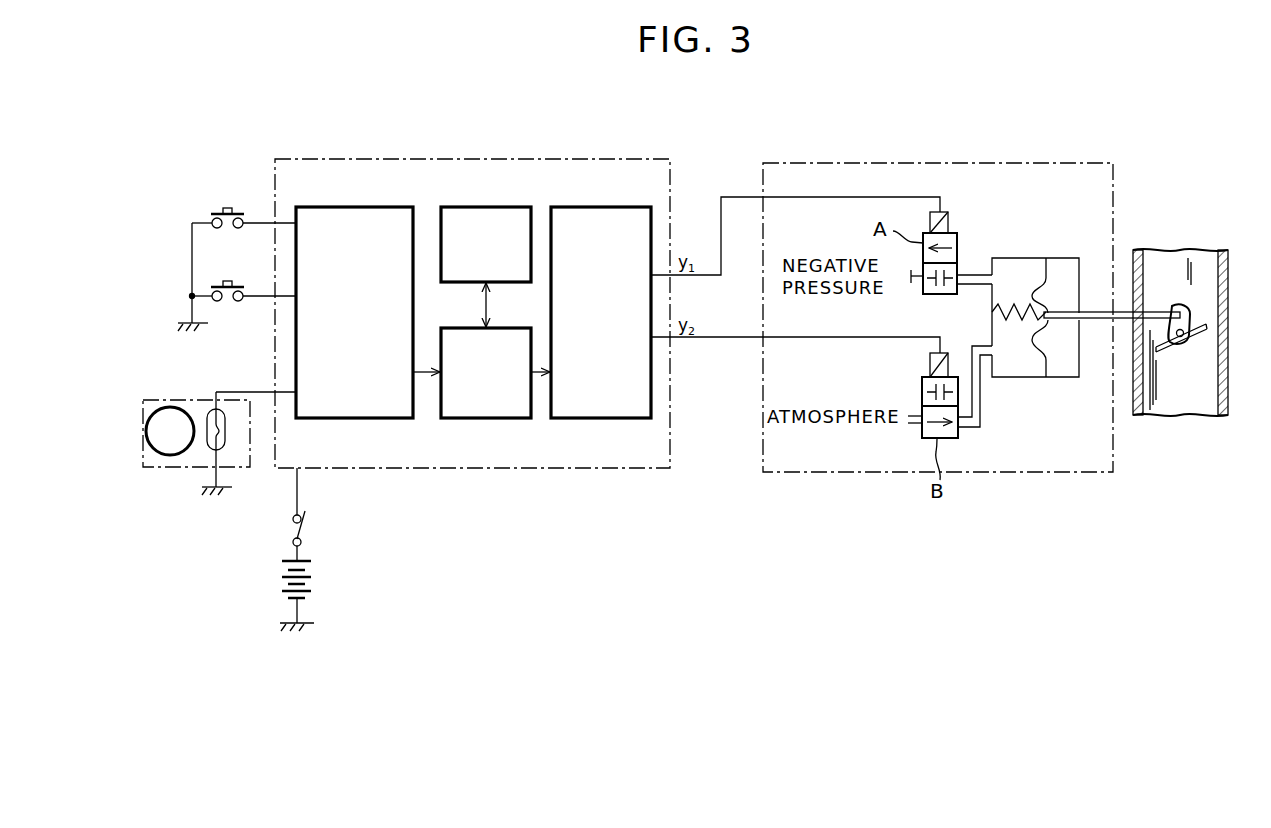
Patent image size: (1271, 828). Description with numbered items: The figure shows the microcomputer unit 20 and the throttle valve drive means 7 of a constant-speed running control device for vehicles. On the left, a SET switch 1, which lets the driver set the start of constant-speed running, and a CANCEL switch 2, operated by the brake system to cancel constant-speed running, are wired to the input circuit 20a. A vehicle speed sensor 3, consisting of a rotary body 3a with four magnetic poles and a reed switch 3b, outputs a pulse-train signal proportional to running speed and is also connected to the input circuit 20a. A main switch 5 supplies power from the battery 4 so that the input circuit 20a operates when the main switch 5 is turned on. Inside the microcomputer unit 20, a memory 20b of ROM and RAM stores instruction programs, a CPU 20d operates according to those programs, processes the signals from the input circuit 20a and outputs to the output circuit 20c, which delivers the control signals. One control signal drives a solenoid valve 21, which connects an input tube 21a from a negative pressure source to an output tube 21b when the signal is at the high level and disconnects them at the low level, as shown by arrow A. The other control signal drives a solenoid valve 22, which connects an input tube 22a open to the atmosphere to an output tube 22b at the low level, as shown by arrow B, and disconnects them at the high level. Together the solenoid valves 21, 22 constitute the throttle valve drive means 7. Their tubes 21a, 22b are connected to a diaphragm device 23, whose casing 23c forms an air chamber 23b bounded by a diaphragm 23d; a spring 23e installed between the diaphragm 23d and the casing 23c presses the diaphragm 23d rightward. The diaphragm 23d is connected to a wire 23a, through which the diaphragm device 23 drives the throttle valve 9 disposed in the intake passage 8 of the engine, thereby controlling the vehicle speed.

The SET switch 1 is at (227, 207).
The CANCEL switch 2 is at (228, 281).
The vehicle speed sensor 3 is at (203, 436).
The rotary body 3a is at (180, 400).
The reed switch 3b is at (222, 450).
The battery 4 is at (313, 581).
The main switch 5 is at (305, 522).
The throttle valve drive means 7 is at (982, 163).
The intake passage 8 is at (1206, 257).
The throttle valve 9 is at (1207, 330).
The microcomputer unit 20 is at (412, 158).
The input circuit 20a is at (353, 207).
The memory 20b is at (486, 207).
The output circuit 20c is at (598, 207).
The CPU 20d is at (492, 418).
The solenoid valve 21 is at (954, 259).
The input tube 21a is at (976, 273).
The output tube 21b is at (913, 283).
The solenoid valve 22 is at (942, 406).
The input tube 22a is at (912, 423).
The output tube 22b is at (962, 427).
The diaphragm device 23 is at (1086, 325).
The wire 23a is at (1118, 312).
The air chamber 23b is at (1046, 258).
The casing 23c is at (1040, 378).
The diaphragm 23d is at (1062, 337).
The spring 23e is at (1012, 324).